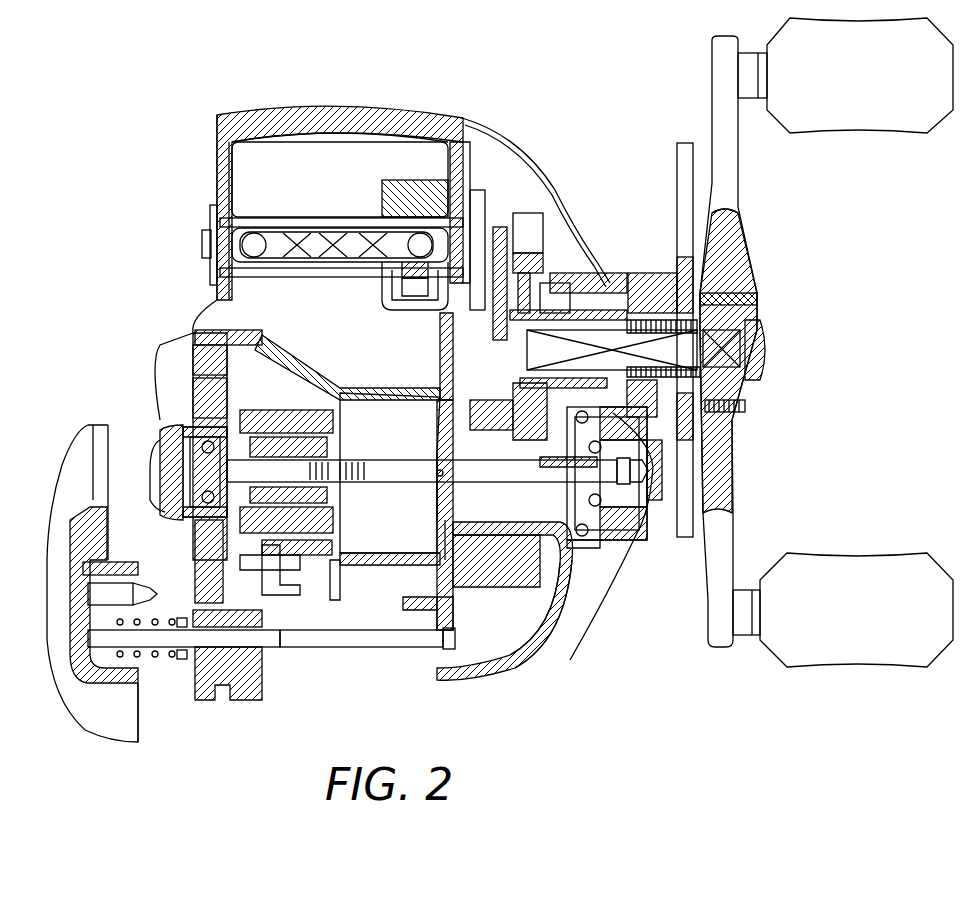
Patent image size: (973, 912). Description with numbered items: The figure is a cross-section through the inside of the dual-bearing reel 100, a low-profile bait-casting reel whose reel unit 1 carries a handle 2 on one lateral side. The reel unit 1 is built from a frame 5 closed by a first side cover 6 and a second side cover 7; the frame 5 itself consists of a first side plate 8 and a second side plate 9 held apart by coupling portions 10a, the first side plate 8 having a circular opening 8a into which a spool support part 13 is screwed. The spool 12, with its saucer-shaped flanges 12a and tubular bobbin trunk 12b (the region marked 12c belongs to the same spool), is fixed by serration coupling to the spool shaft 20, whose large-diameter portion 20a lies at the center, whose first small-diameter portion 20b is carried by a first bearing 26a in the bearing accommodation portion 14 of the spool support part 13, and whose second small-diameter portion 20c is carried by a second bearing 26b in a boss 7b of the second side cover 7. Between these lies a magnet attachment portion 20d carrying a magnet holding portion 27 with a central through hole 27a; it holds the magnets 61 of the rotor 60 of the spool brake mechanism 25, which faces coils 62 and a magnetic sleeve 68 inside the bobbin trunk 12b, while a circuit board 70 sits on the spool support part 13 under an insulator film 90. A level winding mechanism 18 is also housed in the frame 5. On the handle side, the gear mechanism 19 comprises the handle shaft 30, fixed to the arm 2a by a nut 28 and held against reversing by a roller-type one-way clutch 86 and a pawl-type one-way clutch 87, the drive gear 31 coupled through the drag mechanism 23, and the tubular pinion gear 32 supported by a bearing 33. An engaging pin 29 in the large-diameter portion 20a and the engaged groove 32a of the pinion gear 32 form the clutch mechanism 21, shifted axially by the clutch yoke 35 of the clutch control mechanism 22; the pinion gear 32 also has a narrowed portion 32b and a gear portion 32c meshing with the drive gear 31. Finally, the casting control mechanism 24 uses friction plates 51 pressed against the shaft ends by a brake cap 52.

The dual-bearing reel 100 is at (210, 105).
The reel unit 1 is at (470, 100).
The handle 2 is at (765, 215).
The arm 2a is at (750, 247).
The frame 5 is at (340, 155).
The first side cover 6 is at (65, 462).
The second side cover 7 is at (560, 188).
The boss 7b is at (695, 406).
The first side plate 8 is at (215, 160).
The circular opening 8a is at (165, 298).
The second side plate 9 is at (508, 190).
The coupling portions 10a is at (262, 117).
The spool 12 is at (352, 393).
The flanges 12a is at (212, 297).
The bobbin trunk 12b is at (300, 390).
The frame side plate 12c is at (200, 298).
The spool support part 13 is at (195, 600).
The bearing accommodation portion 14 is at (212, 580).
The level winding mechanism 18 is at (326, 188).
The gear mechanism 19 is at (525, 128).
The spool shaft 20 is at (392, 470).
The large-diameter portion 20a is at (437, 540).
The first small-diameter portion 20b is at (185, 480).
The second small-diameter portion 20c is at (640, 480).
The magnet attachment portion 20d is at (315, 570).
The clutch mechanism 21 is at (418, 647).
The clutch control mechanism 22 is at (572, 560).
The drag mechanism 23 is at (554, 255).
The casting control mechanism 24 is at (655, 510).
The spool brake mechanism 25 is at (262, 360).
The first bearing 26a is at (180, 410).
The second bearing 26b is at (610, 515).
The magnet holding portion 27 is at (330, 556).
The through hole 27a is at (320, 575).
The nut 28 is at (767, 338).
The engaging pin 29 is at (440, 478).
The handle shaft 30 is at (757, 296).
The drive gear 31 is at (525, 222).
The pinion gear 32 is at (510, 565).
The engaged groove 32a is at (488, 660).
The narrowed portion 32b is at (540, 655).
The gear portion 32c is at (568, 590).
The bearing 33 is at (452, 575).
The clutch yoke 35 is at (575, 552).
The friction plates 51 is at (183, 450).
The brake cap 52 is at (625, 545).
The rotor 60 is at (300, 430).
The magnets 61 is at (338, 600).
The coils 62 is at (247, 630).
The sleeve 68 is at (195, 360).
The circuit board 70 is at (193, 377).
The roller-type one-way clutch 86 is at (590, 300).
The pawl-type one-way clutch 87 is at (505, 240).
The insulator film 90 is at (230, 630).